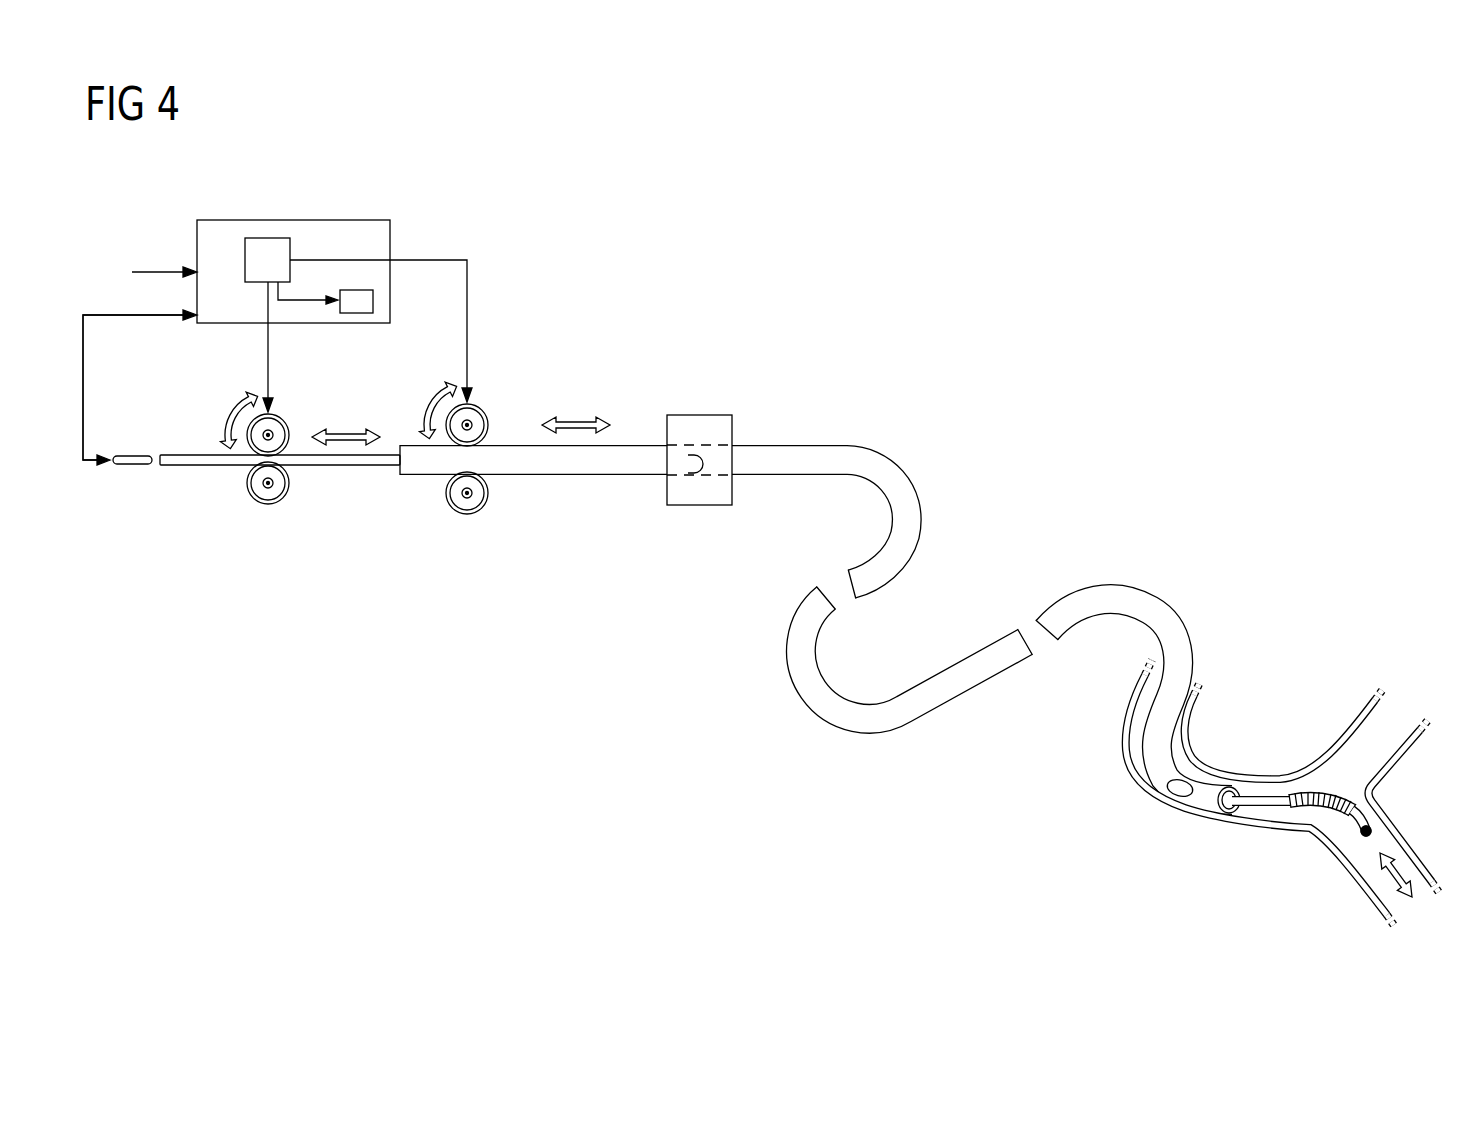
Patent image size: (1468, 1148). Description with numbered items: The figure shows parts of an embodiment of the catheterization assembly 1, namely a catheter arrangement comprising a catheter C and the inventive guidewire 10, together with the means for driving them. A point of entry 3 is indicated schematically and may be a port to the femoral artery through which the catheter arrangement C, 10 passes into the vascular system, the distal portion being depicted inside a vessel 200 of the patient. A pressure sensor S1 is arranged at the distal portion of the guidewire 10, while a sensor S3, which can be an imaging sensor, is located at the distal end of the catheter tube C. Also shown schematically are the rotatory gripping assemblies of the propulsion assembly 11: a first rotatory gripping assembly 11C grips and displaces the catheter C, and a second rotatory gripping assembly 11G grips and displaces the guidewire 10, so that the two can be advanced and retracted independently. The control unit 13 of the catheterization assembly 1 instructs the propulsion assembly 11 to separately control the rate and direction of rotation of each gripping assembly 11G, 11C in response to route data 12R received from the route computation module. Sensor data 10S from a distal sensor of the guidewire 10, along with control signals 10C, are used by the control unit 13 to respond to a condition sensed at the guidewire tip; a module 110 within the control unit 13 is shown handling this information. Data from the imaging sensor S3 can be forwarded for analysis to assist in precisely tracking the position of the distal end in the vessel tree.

The catheterization assembly 1 is at (578, 234).
The point of entry 3 is at (697, 415).
The guidewire 10 is at (190, 462).
The sensor data 10S is at (85, 386).
The guidewire control signal 10C is at (123, 386).
The propulsion assembly 11 is at (262, 238).
The second rotatory gripping assembly 11G is at (286, 513).
The first rotatory gripping assembly 11C is at (493, 531).
The route data 12R is at (158, 270).
The control unit 13 is at (390, 238).
The processing module 110 is at (357, 313).
The catheter C is at (885, 472).
The blood vessel 200 is at (1337, 750).
The pressure sensor S1 is at (1375, 825).
The sensor S3 is at (1180, 797).